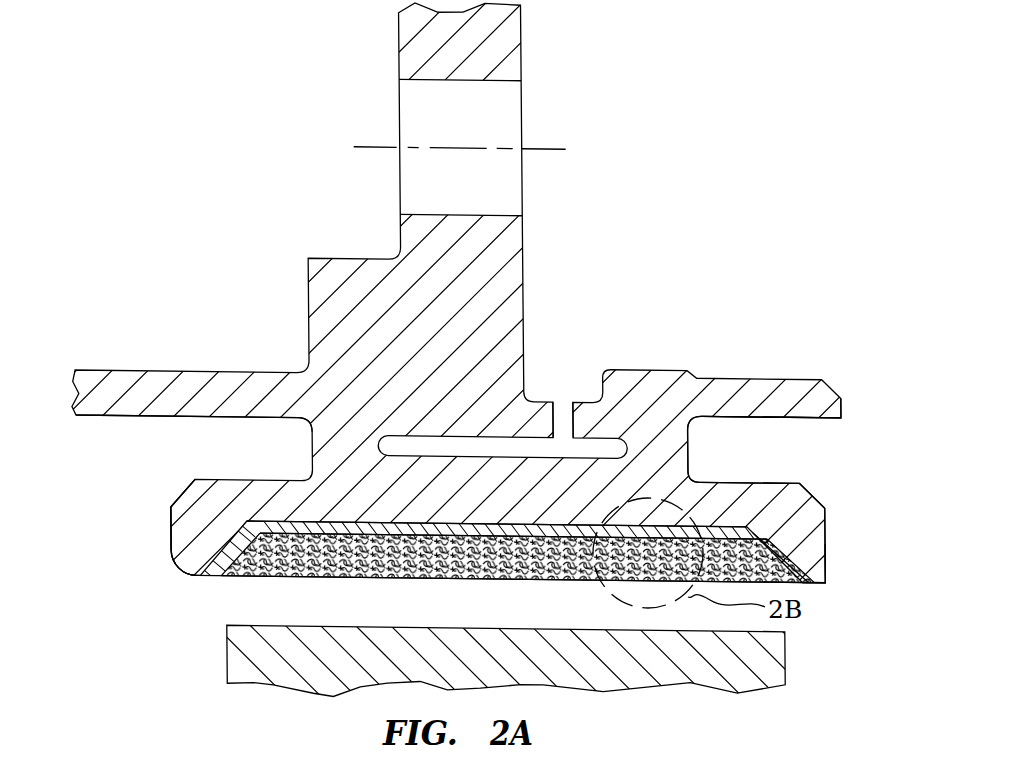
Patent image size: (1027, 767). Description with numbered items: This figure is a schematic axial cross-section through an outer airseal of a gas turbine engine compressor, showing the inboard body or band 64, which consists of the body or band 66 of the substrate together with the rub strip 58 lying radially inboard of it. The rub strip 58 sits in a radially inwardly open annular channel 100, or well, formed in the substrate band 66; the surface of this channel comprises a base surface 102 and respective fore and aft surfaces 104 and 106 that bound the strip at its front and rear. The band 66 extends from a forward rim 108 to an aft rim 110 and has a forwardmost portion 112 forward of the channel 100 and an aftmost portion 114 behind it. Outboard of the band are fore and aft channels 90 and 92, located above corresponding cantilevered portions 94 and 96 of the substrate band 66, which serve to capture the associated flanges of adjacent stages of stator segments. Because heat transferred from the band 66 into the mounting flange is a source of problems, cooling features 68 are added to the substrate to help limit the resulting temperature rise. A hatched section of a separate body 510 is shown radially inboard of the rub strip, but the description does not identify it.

The rub strip 58 is at (291, 546).
The inboard body or band 64 is at (83, 480).
The band of the substrate 66 is at (721, 503).
The cooling features 68 is at (513, 445).
The fore channel 90 is at (197, 452).
The aft channel 92 is at (781, 451).
The cantilevered portion 94 is at (186, 547).
The cantilevered portion 96 is at (798, 508).
The annular channel 100 is at (447, 527).
The base surface 102 is at (384, 527).
The fore surface 104 is at (262, 542).
The aft surface 106 is at (778, 586).
The forward rim 108 is at (205, 511).
The aft rim 110 is at (826, 541).
The forwardmost portion 112 is at (172, 558).
The aftmost portion 114 is at (809, 557).
The substrate 510 is at (893, 668).